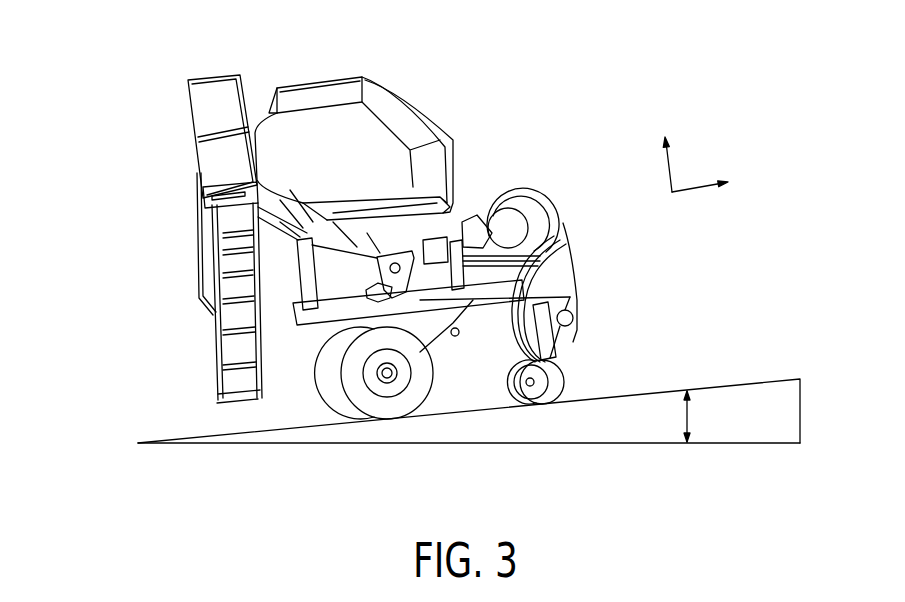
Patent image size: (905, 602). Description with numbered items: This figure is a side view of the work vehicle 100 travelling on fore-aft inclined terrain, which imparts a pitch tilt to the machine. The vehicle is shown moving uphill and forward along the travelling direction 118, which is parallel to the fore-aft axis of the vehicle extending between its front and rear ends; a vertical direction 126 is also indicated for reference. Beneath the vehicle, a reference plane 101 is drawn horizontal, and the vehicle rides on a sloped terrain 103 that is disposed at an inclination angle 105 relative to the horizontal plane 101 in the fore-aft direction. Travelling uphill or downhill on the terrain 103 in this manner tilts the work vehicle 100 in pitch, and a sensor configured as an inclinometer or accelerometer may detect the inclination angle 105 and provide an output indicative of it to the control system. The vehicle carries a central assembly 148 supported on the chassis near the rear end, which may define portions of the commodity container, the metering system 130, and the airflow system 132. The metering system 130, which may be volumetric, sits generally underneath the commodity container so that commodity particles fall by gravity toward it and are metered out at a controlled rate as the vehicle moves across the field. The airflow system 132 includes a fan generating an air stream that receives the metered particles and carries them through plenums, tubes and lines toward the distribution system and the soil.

The work vehicle 100 is at (157, 67).
The reference horizontal plane 101 is at (470, 444).
The sloped terrain 103 is at (745, 383).
The inclination angle 105 is at (690, 413).
The travelling direction 118 is at (697, 190).
The vertical direction 126 is at (675, 168).
The metering system 130 is at (372, 257).
The airflow system 132 is at (364, 288).
The central assembly 148 is at (397, 247).